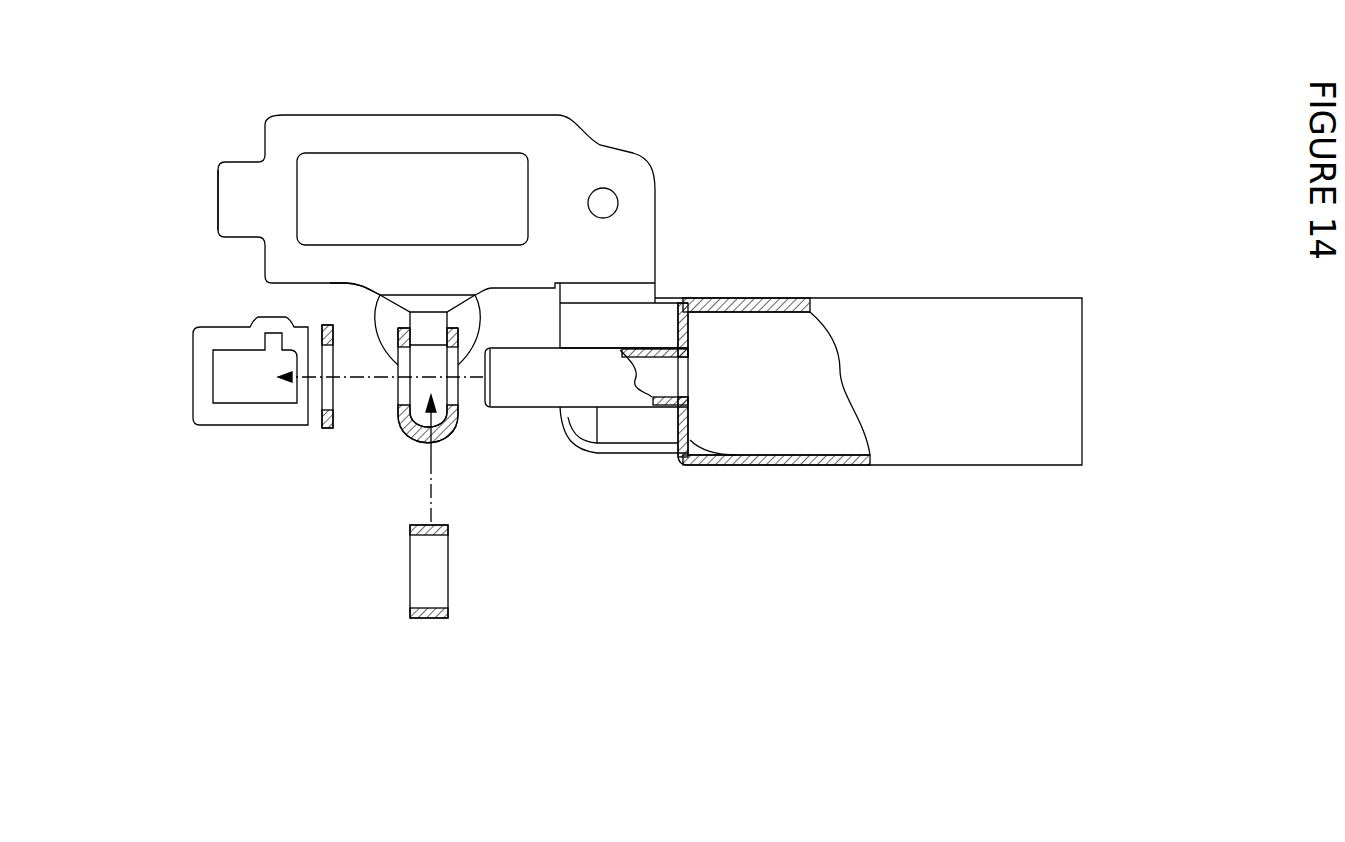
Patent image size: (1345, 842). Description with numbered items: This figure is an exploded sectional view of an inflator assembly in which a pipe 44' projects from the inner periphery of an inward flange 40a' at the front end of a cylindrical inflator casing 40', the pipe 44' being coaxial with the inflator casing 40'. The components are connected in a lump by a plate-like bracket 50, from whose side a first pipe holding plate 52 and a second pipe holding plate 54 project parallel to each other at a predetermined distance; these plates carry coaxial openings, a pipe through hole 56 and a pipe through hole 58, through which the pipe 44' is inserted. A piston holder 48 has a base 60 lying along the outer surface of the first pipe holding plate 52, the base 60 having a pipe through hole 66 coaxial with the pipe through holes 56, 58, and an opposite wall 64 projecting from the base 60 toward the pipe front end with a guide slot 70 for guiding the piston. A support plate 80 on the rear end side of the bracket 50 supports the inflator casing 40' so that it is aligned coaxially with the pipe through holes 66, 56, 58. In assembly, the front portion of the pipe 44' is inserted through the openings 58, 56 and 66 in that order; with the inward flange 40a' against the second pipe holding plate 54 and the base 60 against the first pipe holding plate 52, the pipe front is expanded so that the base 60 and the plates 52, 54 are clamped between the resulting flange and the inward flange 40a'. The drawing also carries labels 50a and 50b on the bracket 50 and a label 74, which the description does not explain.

The bracket 50 is at (367, 137).
The housing left step portion 50a is at (218, 197).
The mounting hole 50b is at (605, 200).
The base 60 is at (345, 318).
The pipe through hole 56 is at (380, 297).
The pipe through hole 58 is at (475, 295).
The opposite wall 64 is at (190, 337).
The guide slot 70 is at (228, 357).
The pipe through hole 66 is at (308, 407).
The piston holder 48 is at (200, 437).
The first pipe holding plate 52 is at (392, 428).
The second pipe holding plate 54 is at (462, 428).
The plug 74 is at (448, 563).
The support plate 80 is at (653, 323).
The pipe 44' is at (586, 450).
The inflator casing 40' is at (945, 362).
The inward flange 40a' is at (770, 497).